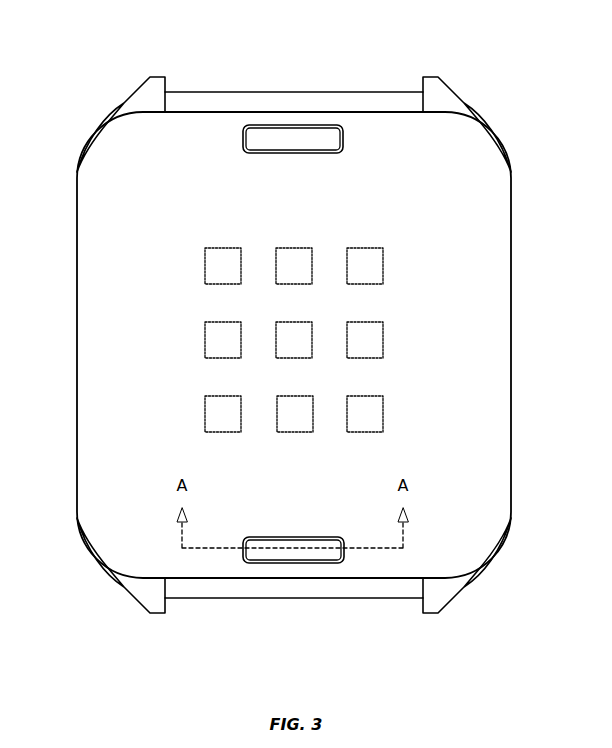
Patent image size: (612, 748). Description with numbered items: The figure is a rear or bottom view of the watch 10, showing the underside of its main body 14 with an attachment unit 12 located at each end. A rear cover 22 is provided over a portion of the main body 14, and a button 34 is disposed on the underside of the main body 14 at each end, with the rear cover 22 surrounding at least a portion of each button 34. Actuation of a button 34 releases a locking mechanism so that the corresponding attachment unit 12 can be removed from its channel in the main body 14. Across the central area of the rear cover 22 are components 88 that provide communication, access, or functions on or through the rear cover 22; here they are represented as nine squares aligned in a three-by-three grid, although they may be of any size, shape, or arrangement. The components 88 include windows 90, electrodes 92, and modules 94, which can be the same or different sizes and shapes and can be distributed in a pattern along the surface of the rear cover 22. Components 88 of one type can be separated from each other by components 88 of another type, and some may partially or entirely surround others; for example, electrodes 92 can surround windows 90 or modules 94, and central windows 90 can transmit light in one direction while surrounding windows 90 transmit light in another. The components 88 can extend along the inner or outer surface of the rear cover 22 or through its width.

The watch 10 is at (556, 590).
The attachment unit 12 is at (141, 86).
The main body 14 is at (390, 92).
The rear cover 22 is at (108, 517).
The button 34 is at (292, 138).
The components 88 is at (264, 340).
The window 90 is at (220, 343).
The electrode 92 is at (222, 260).
The module 94 is at (294, 446).